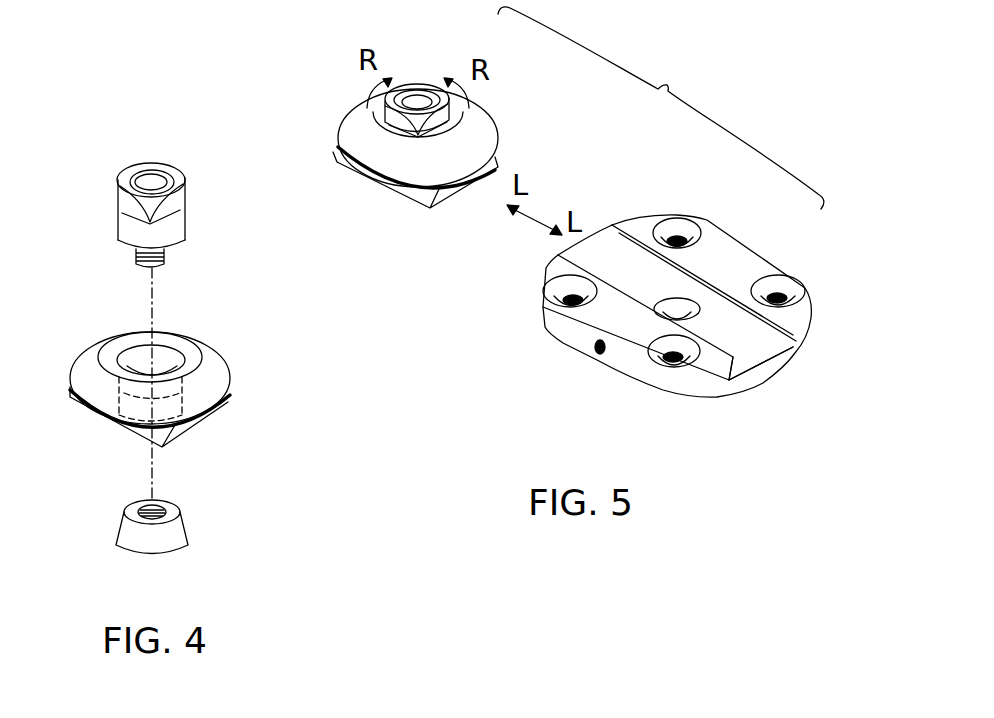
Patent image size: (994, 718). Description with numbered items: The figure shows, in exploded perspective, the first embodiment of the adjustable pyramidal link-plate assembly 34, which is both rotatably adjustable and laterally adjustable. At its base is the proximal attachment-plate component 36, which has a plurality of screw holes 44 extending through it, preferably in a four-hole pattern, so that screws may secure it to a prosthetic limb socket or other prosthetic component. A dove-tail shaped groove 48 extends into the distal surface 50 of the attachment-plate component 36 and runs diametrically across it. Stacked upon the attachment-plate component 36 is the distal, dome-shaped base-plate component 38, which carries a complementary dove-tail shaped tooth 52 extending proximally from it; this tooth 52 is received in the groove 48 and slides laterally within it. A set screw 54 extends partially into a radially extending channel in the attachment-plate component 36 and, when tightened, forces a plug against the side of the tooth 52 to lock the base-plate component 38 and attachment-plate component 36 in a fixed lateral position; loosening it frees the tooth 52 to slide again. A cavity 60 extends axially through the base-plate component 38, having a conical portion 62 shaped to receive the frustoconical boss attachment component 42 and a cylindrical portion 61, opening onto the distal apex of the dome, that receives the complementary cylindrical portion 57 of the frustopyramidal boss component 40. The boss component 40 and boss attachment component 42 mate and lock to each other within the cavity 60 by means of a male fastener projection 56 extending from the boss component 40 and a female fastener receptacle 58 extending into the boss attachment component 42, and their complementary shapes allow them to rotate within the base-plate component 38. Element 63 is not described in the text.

In FIG. 5, the adjustable pyramidal link-plate assembly 34 is at (661, 108).
In FIG. 5, the proximal attachment-plate component 36 is at (734, 250).
In FIG. 4, the dome-shaped base-plate component 38 is at (202, 353).
In FIG. 5, the dome-shaped base-plate component 38 is at (487, 128).
In FIG. 4, the frustopyramidal boss component 40 is at (118, 224).
In FIG. 5, the frustopyramidal boss component 40 is at (417, 86).
In FIG. 4, the frustoconical boss attachment component 42 is at (178, 528).
In FIG. 5, the screw holes 44 is at (672, 218).
In FIG. 5, the dove-tail shaped groove 48 is at (763, 360).
In FIG. 5, the distal surface 50 is at (618, 222).
In FIG. 4, the dove-tail shaped tooth 52 is at (208, 415).
In FIG. 5, the dove-tail shaped tooth 52 is at (338, 152).
In FIG. 5, the set screw 54 is at (603, 355).
In FIG. 4, the male fastener projection 56 is at (170, 253).
In FIG. 4, the cylindrical portion 57 is at (184, 223).
In FIG. 4, the female fastener receptacle 58 is at (138, 505).
In FIG. 4, the cavity 60 is at (133, 362).
In FIG. 4, the cylindrical portion 61 is at (166, 350).
In FIG. 4, the conical portion 62 is at (190, 396).
In FIG. 4, the chamfer lobes 63 is at (122, 198).
In FIG. 5, the chamfer lobes 63 is at (400, 133).